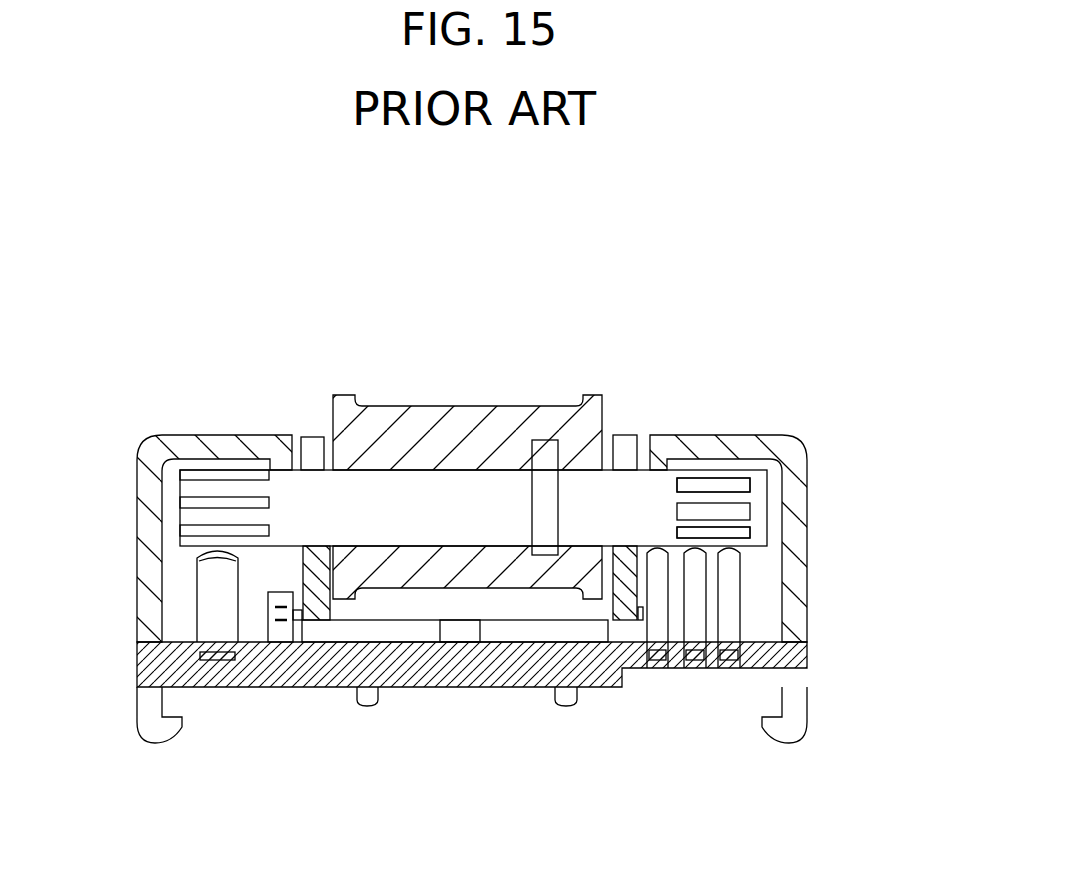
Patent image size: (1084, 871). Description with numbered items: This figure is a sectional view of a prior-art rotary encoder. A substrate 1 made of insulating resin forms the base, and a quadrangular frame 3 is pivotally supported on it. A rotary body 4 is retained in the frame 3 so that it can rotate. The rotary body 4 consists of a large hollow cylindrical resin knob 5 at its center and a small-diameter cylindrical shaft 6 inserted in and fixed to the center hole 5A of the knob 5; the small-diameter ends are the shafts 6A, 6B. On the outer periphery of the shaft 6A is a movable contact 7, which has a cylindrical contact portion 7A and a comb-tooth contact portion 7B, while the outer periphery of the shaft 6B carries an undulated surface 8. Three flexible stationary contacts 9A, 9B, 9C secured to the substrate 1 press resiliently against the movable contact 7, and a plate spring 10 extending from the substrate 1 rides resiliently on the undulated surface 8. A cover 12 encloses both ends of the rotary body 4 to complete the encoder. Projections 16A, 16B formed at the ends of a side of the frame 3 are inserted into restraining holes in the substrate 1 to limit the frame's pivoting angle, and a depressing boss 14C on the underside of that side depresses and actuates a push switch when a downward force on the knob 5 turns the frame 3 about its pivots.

The substrate 1 is at (407, 670).
The quadrangular frame 3 is at (310, 592).
The rotary body 4 is at (173, 222).
The knob 5 is at (440, 428).
The center hole 5A is at (578, 453).
The cylindrical shaft 6 is at (215, 278).
The shaft 6A is at (760, 340).
The shaft 6B is at (317, 342).
The movable contact 7 is at (880, 452).
The cylindrical contact portion 7A is at (663, 507).
The comb-tooth contact portion 7B is at (730, 515).
The undulated surface 8 is at (195, 490).
The flexible stationary contact 9A is at (657, 607).
The flexible stationary contact 9B is at (695, 607).
The flexible stationary contact 9C is at (730, 613).
The plate spring 10 is at (217, 617).
The cover 12 is at (778, 445).
The depressing boss 14C is at (456, 632).
The projection 16A is at (642, 620).
The projection 16B is at (295, 620).